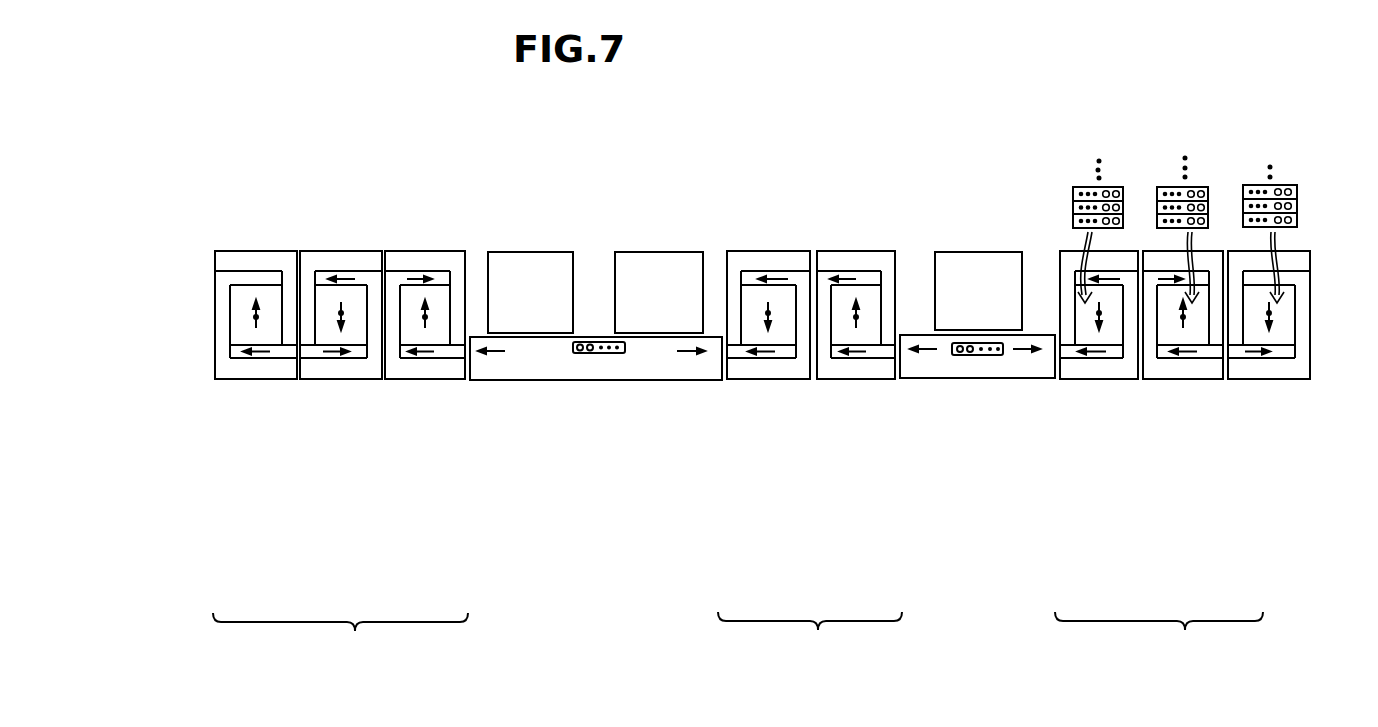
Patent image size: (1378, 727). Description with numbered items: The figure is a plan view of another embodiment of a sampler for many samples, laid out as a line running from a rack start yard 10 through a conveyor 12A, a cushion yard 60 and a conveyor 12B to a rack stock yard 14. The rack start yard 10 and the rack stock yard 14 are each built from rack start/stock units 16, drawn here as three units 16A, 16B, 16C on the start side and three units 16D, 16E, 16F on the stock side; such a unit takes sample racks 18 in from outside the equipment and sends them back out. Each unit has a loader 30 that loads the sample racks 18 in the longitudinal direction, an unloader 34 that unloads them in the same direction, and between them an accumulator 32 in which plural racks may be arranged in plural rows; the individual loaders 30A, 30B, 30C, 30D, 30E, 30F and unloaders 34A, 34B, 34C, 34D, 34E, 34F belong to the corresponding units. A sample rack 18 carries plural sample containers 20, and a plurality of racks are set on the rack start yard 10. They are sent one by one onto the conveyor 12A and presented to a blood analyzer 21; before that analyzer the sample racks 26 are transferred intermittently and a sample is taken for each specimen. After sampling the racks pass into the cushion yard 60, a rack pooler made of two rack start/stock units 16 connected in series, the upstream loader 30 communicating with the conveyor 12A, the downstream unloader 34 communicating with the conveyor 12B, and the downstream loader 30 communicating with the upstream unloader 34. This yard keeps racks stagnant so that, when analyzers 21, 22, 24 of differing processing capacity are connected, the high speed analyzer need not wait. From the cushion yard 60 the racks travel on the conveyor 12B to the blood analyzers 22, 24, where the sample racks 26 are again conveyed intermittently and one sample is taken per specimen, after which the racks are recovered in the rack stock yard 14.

The rack start yard 10 is at (1159, 641).
The conveyor 12A is at (958, 377).
The conveyor 12B is at (600, 378).
The rack stock yard 14 is at (340, 641).
The rack start/stock unit 16 is at (755, 250).
The rack start/stock unit 16A is at (1073, 377).
The rack start/stock unit 16B is at (1202, 378).
The rack start/stock unit 16C is at (1295, 378).
The rack start/stock unit 16D is at (430, 378).
The rack start/stock unit 16E is at (337, 378).
The rack start/stock unit 16F is at (265, 378).
The sample rack 18 is at (1073, 190).
The sample container 20 is at (1100, 192).
The blood analyzer 21 is at (985, 252).
The blood analyzer 22 is at (652, 267).
The blood analyzer 24 is at (528, 267).
The sample rack 26 is at (573, 353).
The loader 30 is at (798, 277).
The loader 30A is at (1130, 270).
The loader 30B is at (1167, 355).
The loader 30C is at (1300, 270).
The loader 30D is at (445, 355).
The loader 30E is at (370, 273).
The loader 30F is at (237, 357).
The accumulator 32 is at (838, 330).
The unloader 34 is at (877, 273).
The unloader 34A is at (1122, 353).
The unloader 34B is at (1150, 272).
The unloader 34C is at (1238, 353).
The unloader 34D is at (447, 270).
The unloader 34E is at (360, 357).
The unloader 34F is at (260, 277).
The cushion yard 60 is at (810, 641).